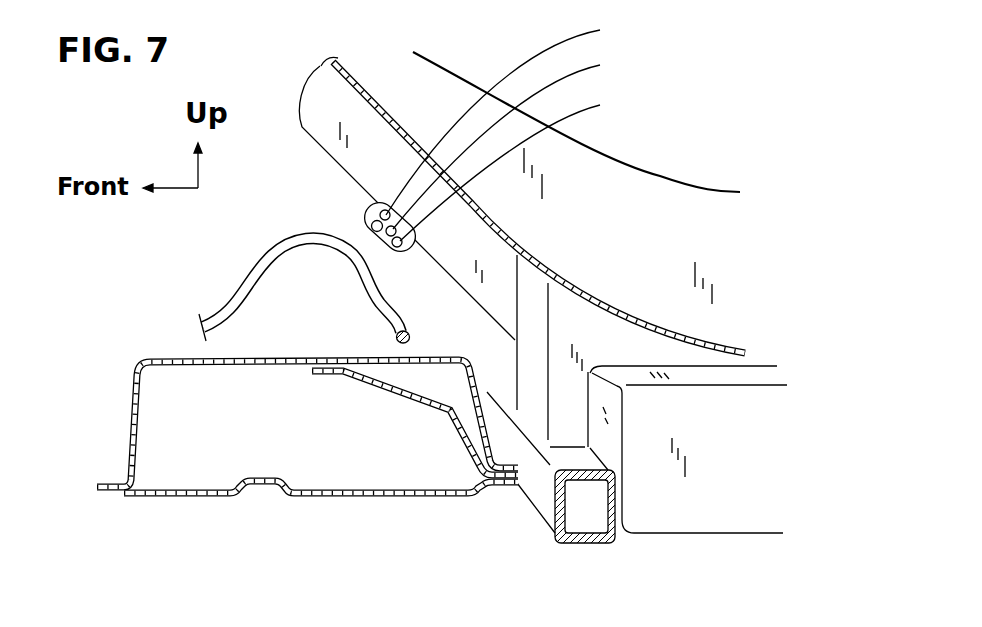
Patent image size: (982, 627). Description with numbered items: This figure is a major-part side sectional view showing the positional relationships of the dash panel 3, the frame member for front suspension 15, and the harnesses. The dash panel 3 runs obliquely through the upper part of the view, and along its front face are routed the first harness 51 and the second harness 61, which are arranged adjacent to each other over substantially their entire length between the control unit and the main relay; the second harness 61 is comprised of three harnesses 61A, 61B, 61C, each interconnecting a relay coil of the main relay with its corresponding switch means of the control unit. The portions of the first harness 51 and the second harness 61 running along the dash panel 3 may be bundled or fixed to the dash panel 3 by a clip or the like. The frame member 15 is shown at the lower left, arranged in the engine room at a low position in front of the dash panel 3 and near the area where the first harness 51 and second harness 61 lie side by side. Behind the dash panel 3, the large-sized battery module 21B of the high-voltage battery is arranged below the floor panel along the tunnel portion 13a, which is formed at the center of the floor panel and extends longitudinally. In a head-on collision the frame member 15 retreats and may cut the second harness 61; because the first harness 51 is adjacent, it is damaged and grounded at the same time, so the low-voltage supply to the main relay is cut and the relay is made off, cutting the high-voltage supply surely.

The dash panel 3 is at (345, 97).
The tunnel portion 13a is at (646, 187).
The frame member for front suspension 15 is at (322, 500).
The battery module 21B is at (712, 522).
The first harness 51 is at (400, 247).
The second harness 61 is at (541, 126).
The second harness 61A is at (518, 114).
The second harness 61B is at (521, 141).
The second harness 61C is at (525, 167).